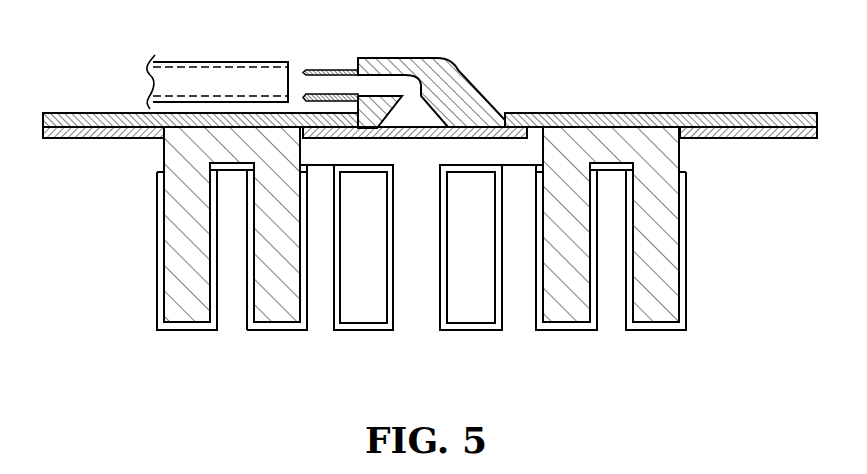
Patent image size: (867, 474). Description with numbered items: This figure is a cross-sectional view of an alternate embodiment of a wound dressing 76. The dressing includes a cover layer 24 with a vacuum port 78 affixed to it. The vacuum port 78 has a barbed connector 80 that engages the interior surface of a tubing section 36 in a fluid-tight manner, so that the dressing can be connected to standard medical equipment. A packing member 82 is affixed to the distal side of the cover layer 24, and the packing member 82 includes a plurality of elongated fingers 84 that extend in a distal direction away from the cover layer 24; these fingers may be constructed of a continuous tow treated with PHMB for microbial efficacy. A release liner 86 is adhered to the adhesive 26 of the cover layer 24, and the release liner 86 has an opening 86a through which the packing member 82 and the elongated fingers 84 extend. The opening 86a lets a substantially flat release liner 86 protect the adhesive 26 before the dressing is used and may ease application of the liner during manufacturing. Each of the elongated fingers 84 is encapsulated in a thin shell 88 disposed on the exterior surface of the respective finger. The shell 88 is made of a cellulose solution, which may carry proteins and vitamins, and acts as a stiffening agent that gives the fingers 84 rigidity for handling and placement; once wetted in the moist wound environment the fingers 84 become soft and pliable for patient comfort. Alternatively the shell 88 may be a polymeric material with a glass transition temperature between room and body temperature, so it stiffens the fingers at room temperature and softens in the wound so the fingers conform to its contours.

The cover layer 24 is at (563, 113).
The adhesive 26 is at (107, 113).
The tubing section 36 is at (206, 61).
The wound dressing 76 is at (430, 206).
The vacuum port 78 is at (404, 81).
The barbed connector 80 is at (316, 70).
The packing member 82 is at (459, 253).
The elongated fingers 84 is at (174, 207).
The release liner 86 is at (107, 138).
The opening 86a is at (690, 147).
The thin shell 88 is at (176, 327).